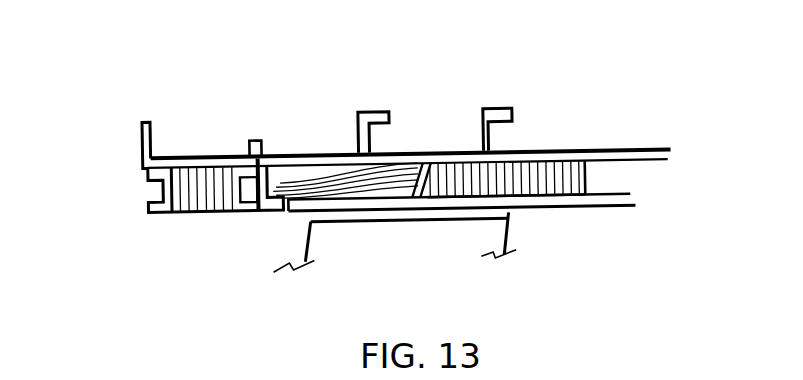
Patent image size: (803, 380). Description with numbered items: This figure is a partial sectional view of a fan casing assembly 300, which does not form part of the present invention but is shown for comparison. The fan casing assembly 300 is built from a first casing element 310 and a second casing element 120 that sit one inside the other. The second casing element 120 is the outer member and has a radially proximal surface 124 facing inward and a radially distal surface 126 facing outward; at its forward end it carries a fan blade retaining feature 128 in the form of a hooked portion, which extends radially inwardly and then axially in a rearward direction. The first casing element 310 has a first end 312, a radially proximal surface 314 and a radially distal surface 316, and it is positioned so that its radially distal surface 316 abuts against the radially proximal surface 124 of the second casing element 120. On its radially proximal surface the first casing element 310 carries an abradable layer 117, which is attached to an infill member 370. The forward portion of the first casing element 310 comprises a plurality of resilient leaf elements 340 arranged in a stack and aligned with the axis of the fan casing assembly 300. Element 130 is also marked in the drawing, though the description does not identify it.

The fan casing assembly 300 is at (146, 62).
The radially distal surface 126 is at (622, 153).
The radially proximal surface 124 is at (657, 163).
The fan blade retaining feature 128 is at (265, 212).
The resilient leaf elements 340 is at (317, 180).
The second casing element 120 is at (570, 161).
The radially distal surface 316 is at (522, 166).
The infill member 370 is at (586, 180).
The first casing element 310 is at (558, 201).
The abradable layer 117 is at (593, 208).
The base plate 130 is at (464, 258).
The first end 312 is at (302, 215).
The radially proximal surface 314 is at (535, 209).